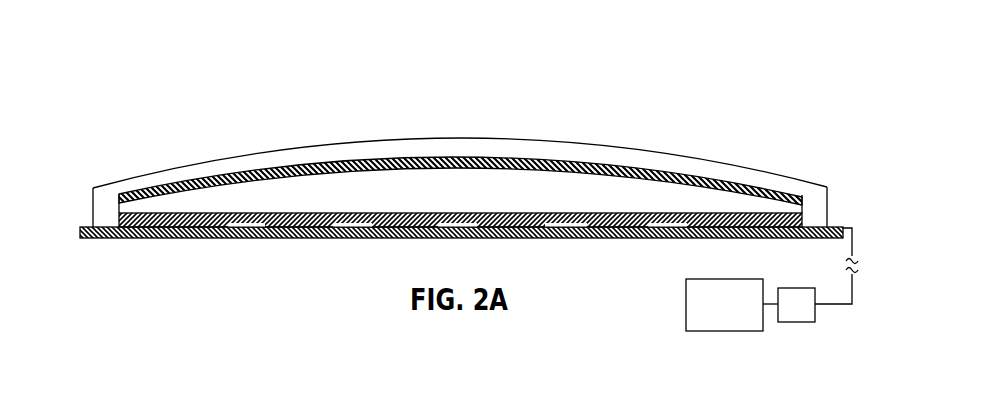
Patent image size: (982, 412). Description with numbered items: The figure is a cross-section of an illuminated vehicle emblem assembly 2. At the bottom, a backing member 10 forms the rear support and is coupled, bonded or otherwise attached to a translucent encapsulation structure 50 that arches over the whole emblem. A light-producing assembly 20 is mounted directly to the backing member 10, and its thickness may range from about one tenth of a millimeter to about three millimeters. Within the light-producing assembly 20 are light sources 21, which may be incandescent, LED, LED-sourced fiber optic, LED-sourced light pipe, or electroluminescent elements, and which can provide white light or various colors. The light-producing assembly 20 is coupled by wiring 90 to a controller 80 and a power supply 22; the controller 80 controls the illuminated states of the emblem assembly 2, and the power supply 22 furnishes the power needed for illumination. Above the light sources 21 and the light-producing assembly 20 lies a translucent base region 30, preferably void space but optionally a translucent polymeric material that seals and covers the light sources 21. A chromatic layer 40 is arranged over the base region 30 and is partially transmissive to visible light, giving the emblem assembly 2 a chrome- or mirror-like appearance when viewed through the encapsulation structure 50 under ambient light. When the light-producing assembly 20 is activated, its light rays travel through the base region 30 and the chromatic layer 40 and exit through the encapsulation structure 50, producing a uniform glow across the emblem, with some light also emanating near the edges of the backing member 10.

The illuminated vehicle emblem assembly 2 is at (193, 110).
The backing member 10 is at (87, 227).
The light-producing assembly 20 is at (172, 209).
The light sources 21 is at (348, 237).
The power supply 22 is at (686, 300).
The translucent base region 30 is at (693, 197).
The chromatic layer 40 is at (203, 197).
The encapsulation structure 50 is at (638, 160).
The controller 80 is at (805, 315).
The wiring 90 is at (835, 305).